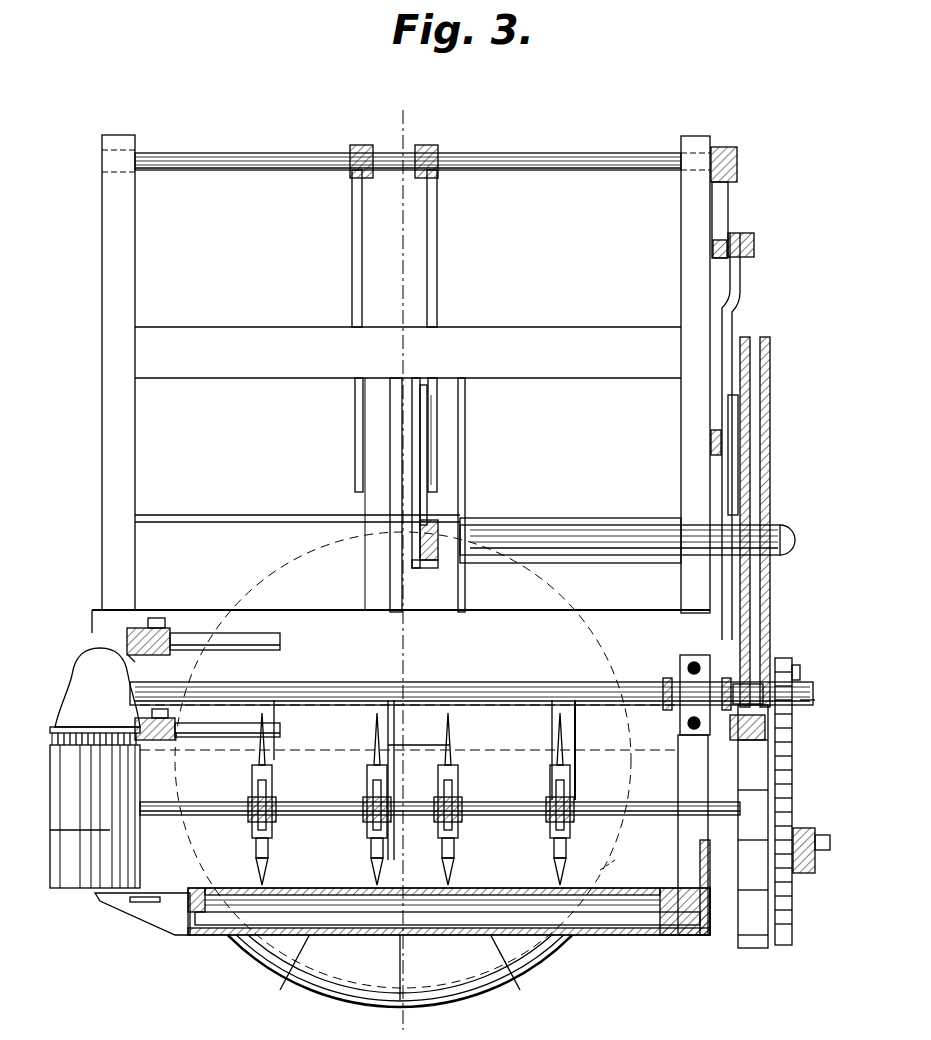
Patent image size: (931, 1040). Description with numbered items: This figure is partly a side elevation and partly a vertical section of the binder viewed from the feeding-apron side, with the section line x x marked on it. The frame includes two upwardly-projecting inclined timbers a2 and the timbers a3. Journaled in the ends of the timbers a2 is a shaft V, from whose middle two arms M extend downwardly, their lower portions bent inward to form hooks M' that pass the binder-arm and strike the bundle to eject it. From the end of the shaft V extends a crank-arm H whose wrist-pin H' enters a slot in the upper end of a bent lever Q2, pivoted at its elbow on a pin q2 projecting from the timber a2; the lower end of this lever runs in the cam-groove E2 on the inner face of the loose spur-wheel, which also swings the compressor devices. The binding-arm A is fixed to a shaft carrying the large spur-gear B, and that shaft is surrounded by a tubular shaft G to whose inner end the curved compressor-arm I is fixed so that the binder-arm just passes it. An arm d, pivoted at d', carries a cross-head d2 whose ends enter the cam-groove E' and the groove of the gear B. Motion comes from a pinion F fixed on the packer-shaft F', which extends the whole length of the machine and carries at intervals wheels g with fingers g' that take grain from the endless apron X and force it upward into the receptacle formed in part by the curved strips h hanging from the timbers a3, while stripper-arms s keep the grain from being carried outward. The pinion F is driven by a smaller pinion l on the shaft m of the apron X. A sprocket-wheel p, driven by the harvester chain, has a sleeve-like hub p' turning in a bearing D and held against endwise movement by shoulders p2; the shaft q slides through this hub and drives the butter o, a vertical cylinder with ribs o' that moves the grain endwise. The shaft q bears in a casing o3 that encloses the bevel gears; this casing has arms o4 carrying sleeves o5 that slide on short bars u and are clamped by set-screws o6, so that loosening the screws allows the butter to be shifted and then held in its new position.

The section line x is at (410, 561).
The inclined timbers a2 is at (401, 384).
The frame timbers a3 is at (408, 352).
The shaft V is at (436, 158).
The arms M is at (389, 248).
The hooks M' is at (410, 435).
The curved strips h is at (365, 415).
The binding-arm A is at (427, 392).
The compressor-arm I is at (440, 505).
The tubular shaft G is at (560, 525).
The crank-arm H is at (734, 220).
The wrist-pin H' is at (754, 244).
The bent lever Q2 is at (740, 283).
The cam-groove E' is at (750, 510).
The cam-groove E2 is at (738, 425).
The spur-gear B is at (774, 522).
The pin q2 is at (710, 446).
The bearing D is at (471, 694).
The sleeve-like hub p' is at (748, 694).
The shoulders p2 is at (735, 740).
The sprocket-wheel p is at (801, 658).
The shaft q is at (814, 700).
The arm d is at (798, 714).
The pivot d' is at (797, 734).
The cross-head d2 is at (778, 655).
The pinion l is at (785, 822).
The pinion F is at (723, 826).
The packer-shaft F' is at (440, 797).
The casing o3 is at (75, 668).
The butter o is at (88, 810).
The ribs o' is at (87, 787).
The short bars u is at (212, 687).
The arms o4 is at (139, 663).
The sleeves o5 is at (186, 691).
The set-screws o6 is at (158, 618).
The finger-wheels g is at (401, 792).
The fingers g' is at (432, 809).
The stripper-arms s is at (266, 720).
The apron shaft m is at (410, 909).
The grain-conveying apron X is at (622, 874).